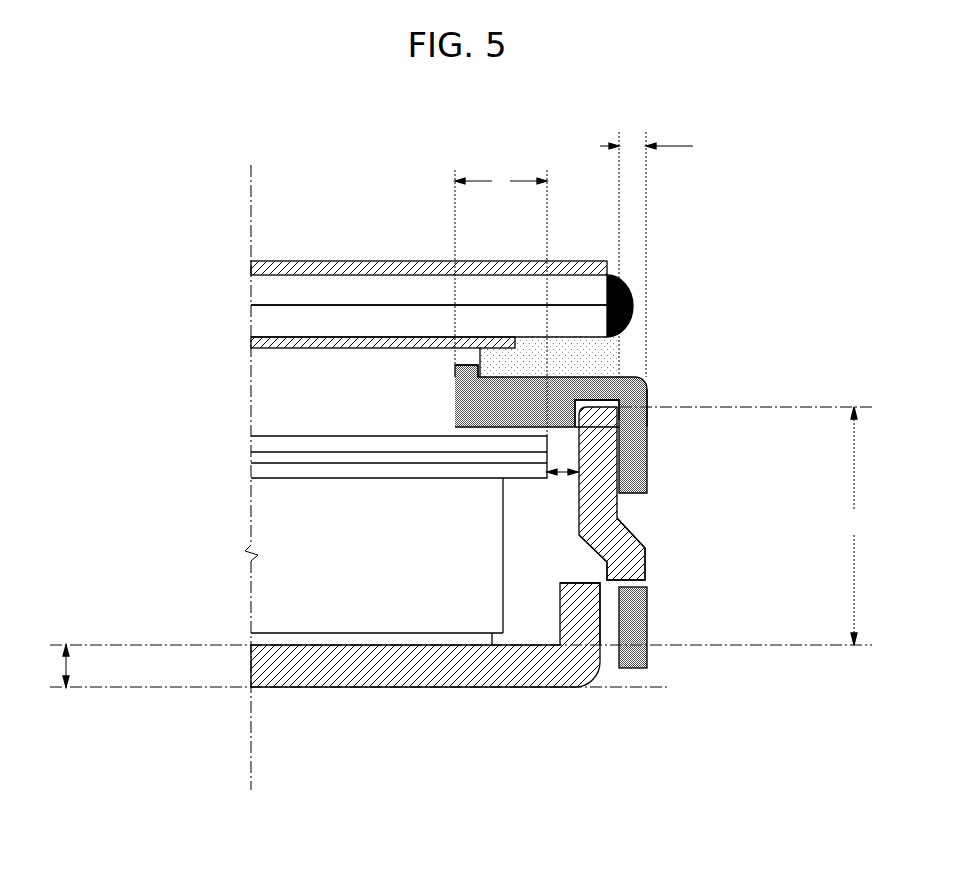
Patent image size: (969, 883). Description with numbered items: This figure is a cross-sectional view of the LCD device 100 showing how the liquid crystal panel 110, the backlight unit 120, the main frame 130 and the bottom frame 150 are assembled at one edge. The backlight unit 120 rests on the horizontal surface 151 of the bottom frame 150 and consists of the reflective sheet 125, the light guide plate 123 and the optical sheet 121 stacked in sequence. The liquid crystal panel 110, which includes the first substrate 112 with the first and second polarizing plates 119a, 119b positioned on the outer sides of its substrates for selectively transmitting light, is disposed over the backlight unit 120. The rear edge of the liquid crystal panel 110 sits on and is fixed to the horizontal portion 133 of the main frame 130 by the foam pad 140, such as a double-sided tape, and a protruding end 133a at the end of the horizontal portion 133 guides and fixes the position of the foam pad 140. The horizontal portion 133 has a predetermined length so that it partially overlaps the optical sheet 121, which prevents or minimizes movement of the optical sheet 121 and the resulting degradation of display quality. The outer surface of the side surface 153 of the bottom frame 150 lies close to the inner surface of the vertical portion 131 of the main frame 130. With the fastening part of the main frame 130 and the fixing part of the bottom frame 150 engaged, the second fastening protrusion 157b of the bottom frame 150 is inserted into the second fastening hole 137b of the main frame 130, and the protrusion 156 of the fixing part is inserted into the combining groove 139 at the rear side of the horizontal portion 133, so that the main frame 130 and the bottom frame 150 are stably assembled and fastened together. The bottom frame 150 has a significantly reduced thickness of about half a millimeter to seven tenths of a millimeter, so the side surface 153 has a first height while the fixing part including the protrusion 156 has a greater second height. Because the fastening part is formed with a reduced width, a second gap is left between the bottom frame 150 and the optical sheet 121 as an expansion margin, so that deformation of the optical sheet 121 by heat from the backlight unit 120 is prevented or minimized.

The LCD device 100 is at (738, 225).
The liquid crystal panel 110 is at (258, 290).
The first substrate 112 is at (258, 318).
The first polarizing plate 119a is at (251, 343).
The second polarizing plate 119b is at (251, 264).
The backlight unit 120 is at (220, 661).
The optical sheet 121 is at (251, 468).
The light guide plate 123 is at (258, 585).
The reflective sheet 125 is at (255, 633).
The main frame 130 is at (772, 345).
The vertical portion 131 is at (632, 405).
The horizontal portion 133 is at (627, 386).
The protruding end 133a is at (455, 368).
The second fastening hole 137b is at (648, 507).
The combining groove 139 is at (632, 412).
The foam pad 140 is at (530, 403).
The bottom frame 150 is at (567, 800).
The horizontal surface 151 is at (508, 674).
The side surface 153 is at (582, 625).
The protrusion 156 is at (624, 438).
The second fastening protrusion 157b is at (646, 565).